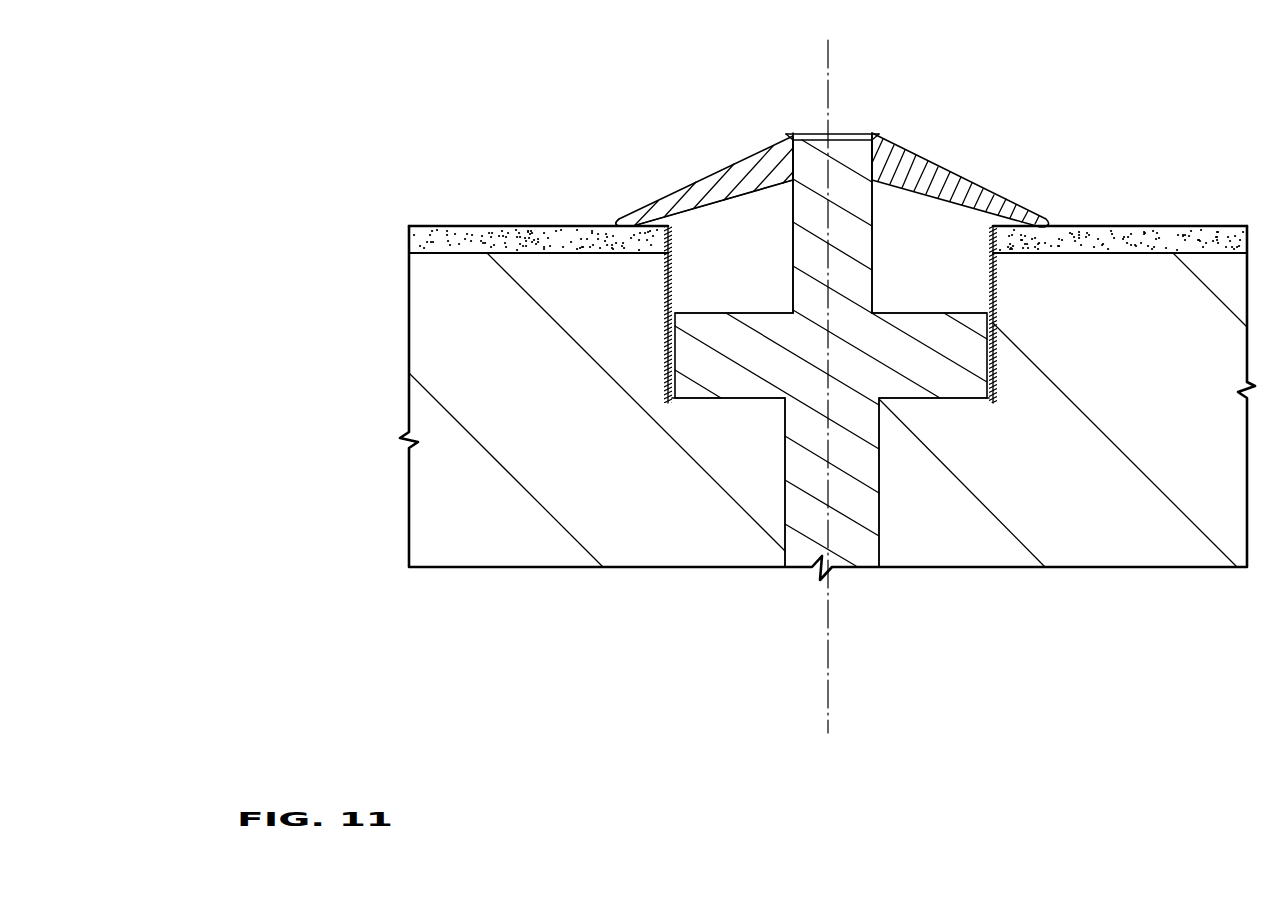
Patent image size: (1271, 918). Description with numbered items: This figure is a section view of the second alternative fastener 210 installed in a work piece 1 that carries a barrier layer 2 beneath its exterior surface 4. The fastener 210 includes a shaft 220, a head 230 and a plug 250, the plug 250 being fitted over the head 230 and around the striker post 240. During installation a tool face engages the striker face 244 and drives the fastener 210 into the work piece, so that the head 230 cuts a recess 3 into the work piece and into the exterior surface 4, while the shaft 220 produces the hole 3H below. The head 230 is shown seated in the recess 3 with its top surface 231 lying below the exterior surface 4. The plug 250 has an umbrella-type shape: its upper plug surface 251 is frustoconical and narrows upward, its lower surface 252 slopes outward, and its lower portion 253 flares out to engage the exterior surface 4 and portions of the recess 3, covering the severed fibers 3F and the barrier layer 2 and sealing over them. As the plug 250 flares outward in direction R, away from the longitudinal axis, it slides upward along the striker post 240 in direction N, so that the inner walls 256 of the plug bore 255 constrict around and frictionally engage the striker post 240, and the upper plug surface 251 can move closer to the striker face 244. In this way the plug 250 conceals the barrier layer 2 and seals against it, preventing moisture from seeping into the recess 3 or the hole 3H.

The structure / base member 1 is at (1135, 507).
The barrier layer 2 is at (1203, 237).
The recess 3 is at (993, 314).
The severed fibers 3F is at (1007, 274).
The hole 3H is at (880, 527).
The exterior surface 4 is at (1125, 226).
The fastener 210 is at (771, 498).
The shaft 220 is at (813, 482).
The head 230 is at (952, 367).
The head top surface 231 is at (700, 316).
The striker post 240 is at (858, 177).
The striker face 244 is at (838, 133).
The plug 250 is at (725, 158).
The upper plug surface 251 is at (995, 187).
The flap lower surface 252 is at (717, 198).
The lower portion 253 is at (615, 223).
The plug bore 255 is at (863, 133).
The inner walls 256 is at (810, 133).
The direction R is at (690, 223).
The direction N is at (770, 198).